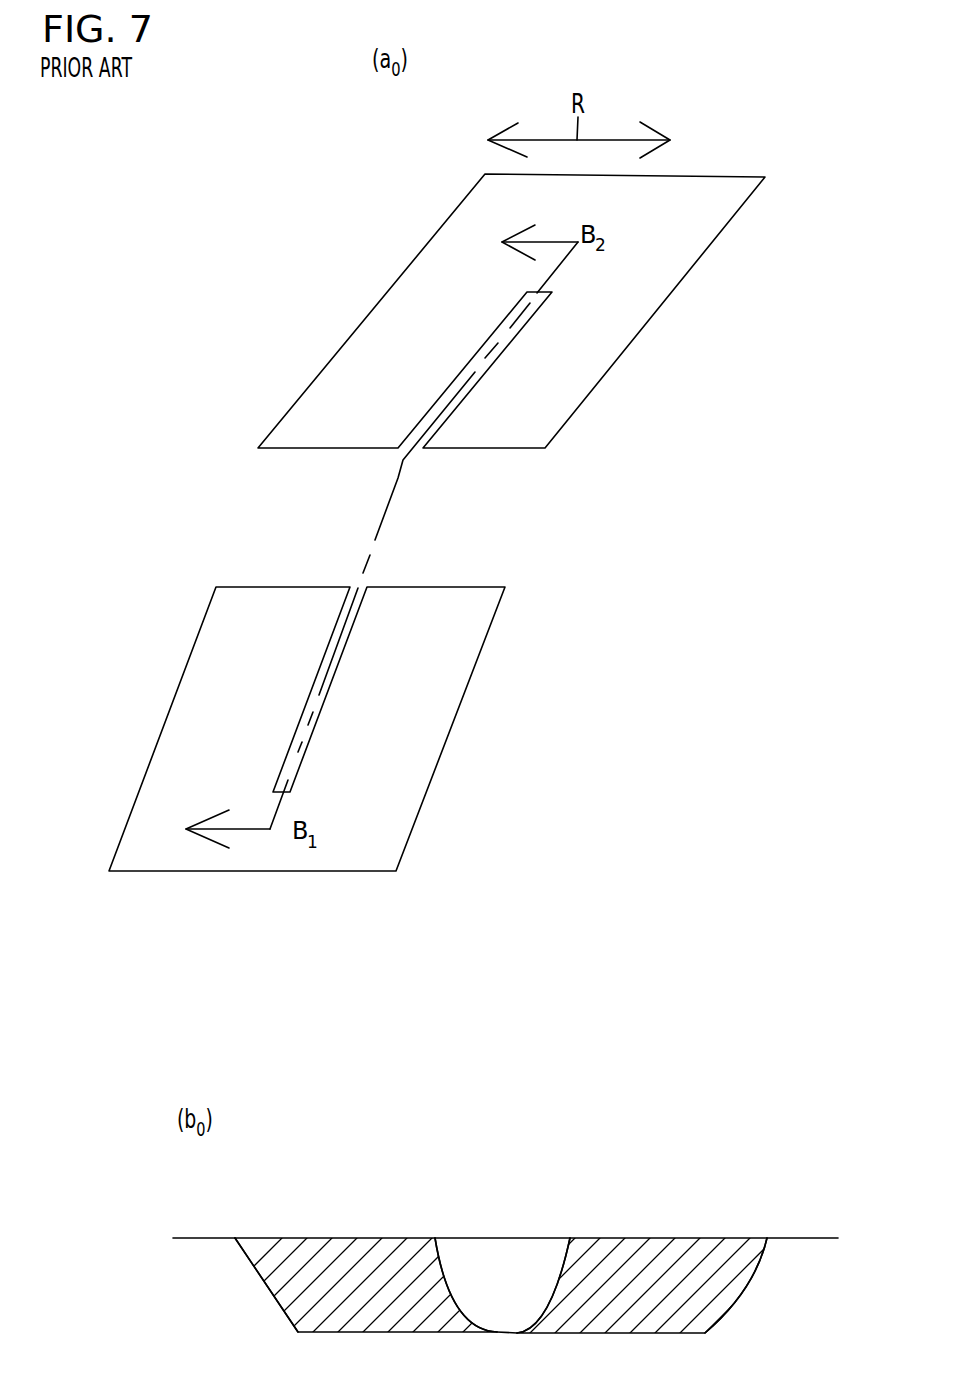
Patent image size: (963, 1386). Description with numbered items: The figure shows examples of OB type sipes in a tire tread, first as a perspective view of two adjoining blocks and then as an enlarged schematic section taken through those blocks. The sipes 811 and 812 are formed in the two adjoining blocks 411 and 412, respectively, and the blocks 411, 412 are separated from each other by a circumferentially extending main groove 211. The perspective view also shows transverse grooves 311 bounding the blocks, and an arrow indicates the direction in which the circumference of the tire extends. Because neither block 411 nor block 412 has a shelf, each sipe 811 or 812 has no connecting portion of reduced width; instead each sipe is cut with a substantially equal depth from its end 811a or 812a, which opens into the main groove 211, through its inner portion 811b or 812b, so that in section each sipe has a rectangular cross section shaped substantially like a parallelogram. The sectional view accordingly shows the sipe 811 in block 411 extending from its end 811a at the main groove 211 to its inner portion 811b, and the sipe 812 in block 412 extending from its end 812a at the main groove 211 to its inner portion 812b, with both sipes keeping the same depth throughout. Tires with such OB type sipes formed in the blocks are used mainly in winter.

The main groove 211 is at (429, 516).
The transverse grooves 311 is at (280, 367).
The block 411 is at (198, 1237).
The block 412 is at (710, 192).
The sipe 811 is at (288, 1257).
The end of sipe 811a is at (438, 1247).
The inner portion of sipe 811b is at (278, 1280).
The sipe 812 is at (638, 1263).
The end of sipe 812a is at (558, 1265).
The inner portion of sipe 812b is at (710, 1278).